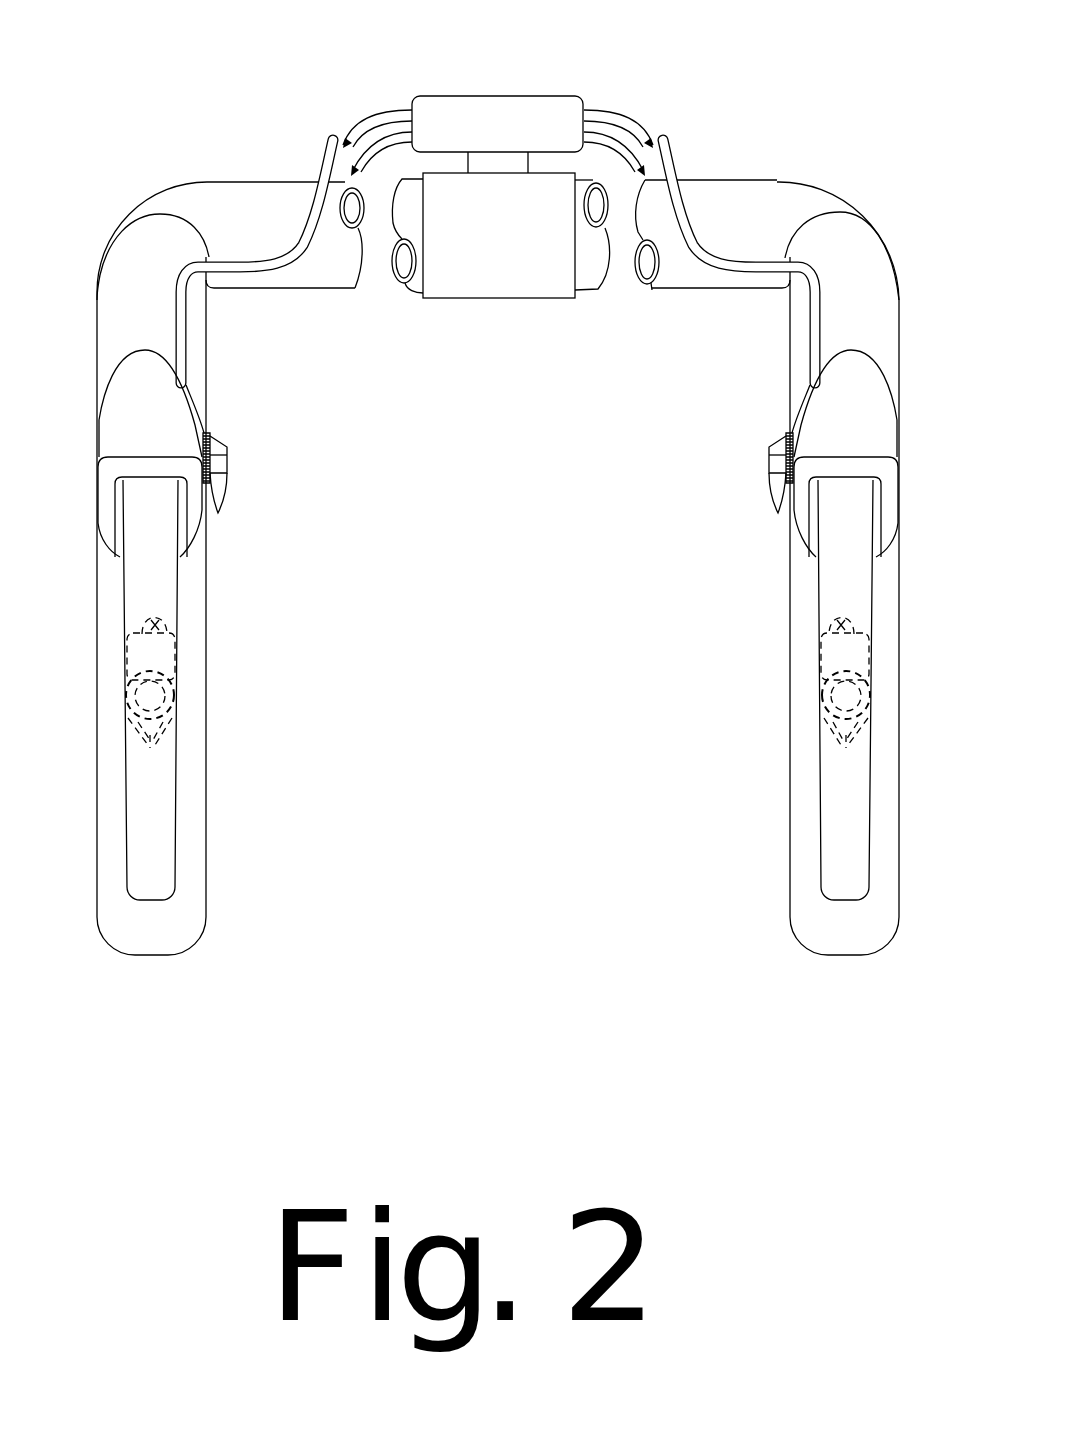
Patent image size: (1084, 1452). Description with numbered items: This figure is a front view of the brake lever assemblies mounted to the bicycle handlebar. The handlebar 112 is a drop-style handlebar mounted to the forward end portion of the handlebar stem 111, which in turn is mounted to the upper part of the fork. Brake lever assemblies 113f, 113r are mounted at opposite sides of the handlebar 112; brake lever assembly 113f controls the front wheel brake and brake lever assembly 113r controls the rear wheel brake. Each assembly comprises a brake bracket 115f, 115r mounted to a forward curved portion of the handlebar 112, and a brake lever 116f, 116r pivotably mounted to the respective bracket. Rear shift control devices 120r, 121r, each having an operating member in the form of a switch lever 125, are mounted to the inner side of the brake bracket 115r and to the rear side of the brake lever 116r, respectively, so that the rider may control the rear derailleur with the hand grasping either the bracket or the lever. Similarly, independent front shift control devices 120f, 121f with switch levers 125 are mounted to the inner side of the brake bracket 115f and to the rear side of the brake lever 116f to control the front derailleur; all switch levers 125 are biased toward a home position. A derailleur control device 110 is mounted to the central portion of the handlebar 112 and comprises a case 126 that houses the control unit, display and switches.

The derailleur control device 110 is at (552, 94).
The handlebar stem 111 is at (529, 283).
The handlebar 112 is at (790, 200).
The brake lever assembly 113r is at (212, 398).
The brake lever assembly 113f is at (783, 405).
The brake bracket 115r is at (170, 400).
The brake bracket 115f is at (822, 413).
The brake lever 116r is at (160, 585).
The brake lever 116f is at (838, 576).
The rear shift control device 120r is at (231, 464).
The front shift control device 120f is at (763, 462).
The rear shift control device 121r is at (182, 677).
The front shift control device 121f is at (815, 681).
The switch lever 125 is at (227, 496).
The case 126 is at (458, 96).